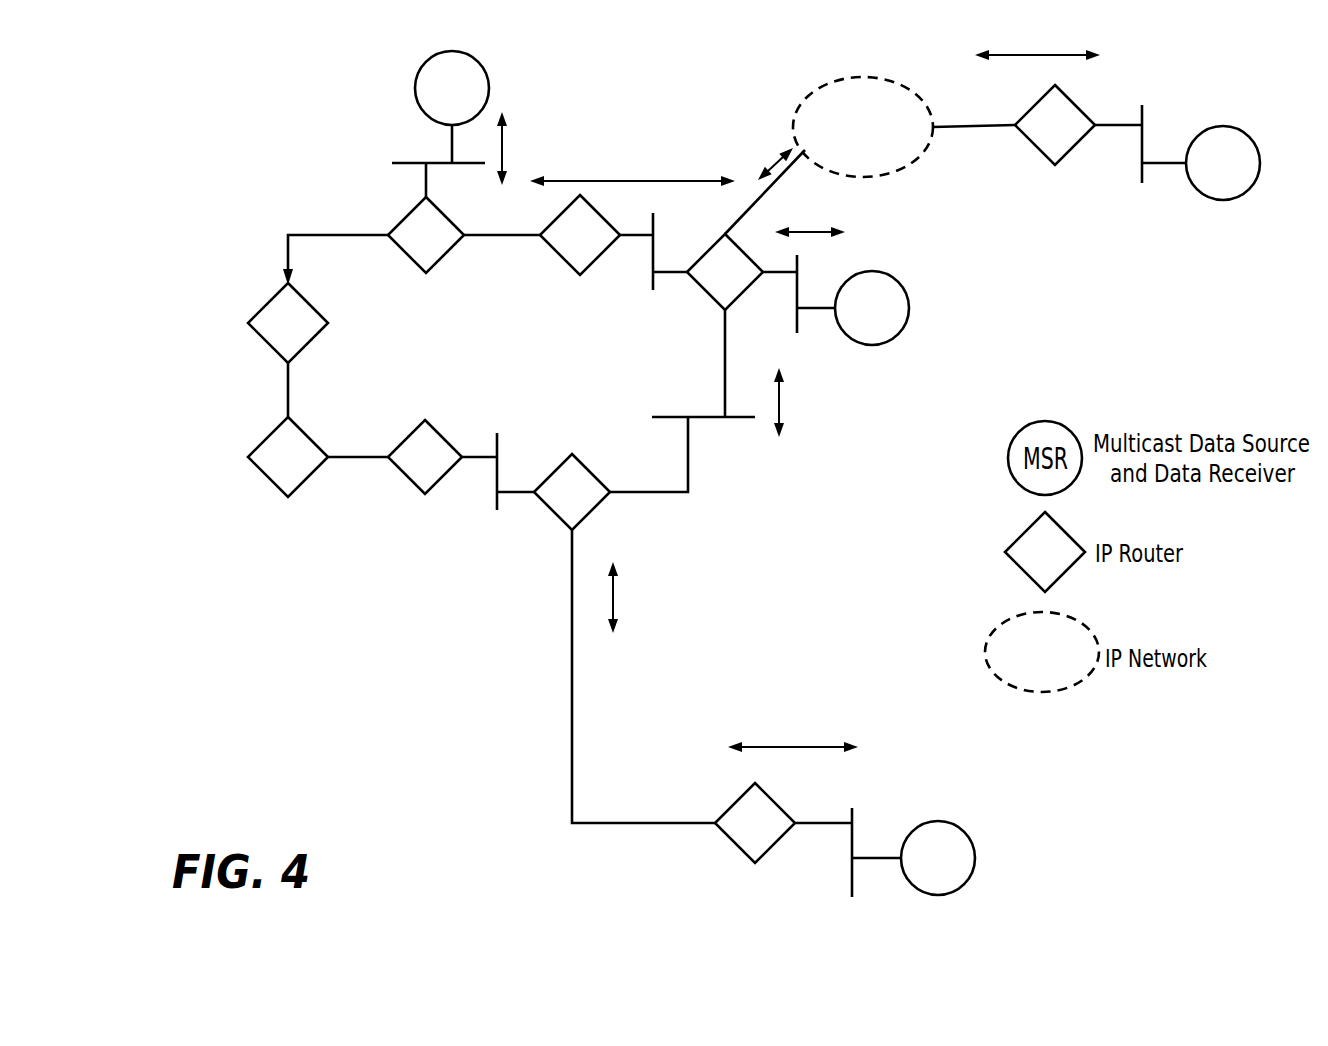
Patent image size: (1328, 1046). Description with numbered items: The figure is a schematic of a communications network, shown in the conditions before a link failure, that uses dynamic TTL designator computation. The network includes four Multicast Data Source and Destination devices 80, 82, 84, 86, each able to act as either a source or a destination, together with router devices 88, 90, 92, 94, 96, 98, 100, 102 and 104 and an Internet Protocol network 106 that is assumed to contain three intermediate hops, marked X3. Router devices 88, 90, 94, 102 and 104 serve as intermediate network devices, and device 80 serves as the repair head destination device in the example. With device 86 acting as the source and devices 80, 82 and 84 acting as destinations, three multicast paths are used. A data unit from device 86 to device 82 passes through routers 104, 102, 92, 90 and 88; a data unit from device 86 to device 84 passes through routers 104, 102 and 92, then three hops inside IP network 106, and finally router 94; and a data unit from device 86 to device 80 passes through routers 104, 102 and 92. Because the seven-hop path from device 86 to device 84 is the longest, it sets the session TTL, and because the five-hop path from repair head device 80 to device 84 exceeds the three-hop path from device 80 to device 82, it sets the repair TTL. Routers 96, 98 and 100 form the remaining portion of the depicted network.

The Multicast Data Source and Destination device 80 is at (900, 280).
The Multicast Data Source and Destination device 82 is at (415, 82).
The Multicast Data Source and Destination device 84 is at (1208, 197).
The Multicast Data Source and Destination device 86 is at (950, 823).
The router device 88 is at (405, 215).
The router device 90 is at (563, 253).
The router device 92 is at (707, 297).
The router device 94 is at (1035, 147).
The router device 96 is at (265, 347).
The router device 98 is at (265, 480).
The router device 100 is at (405, 478).
The router device 102 is at (548, 516).
The router device 104 is at (740, 800).
The IP Network 106 is at (881, 154).